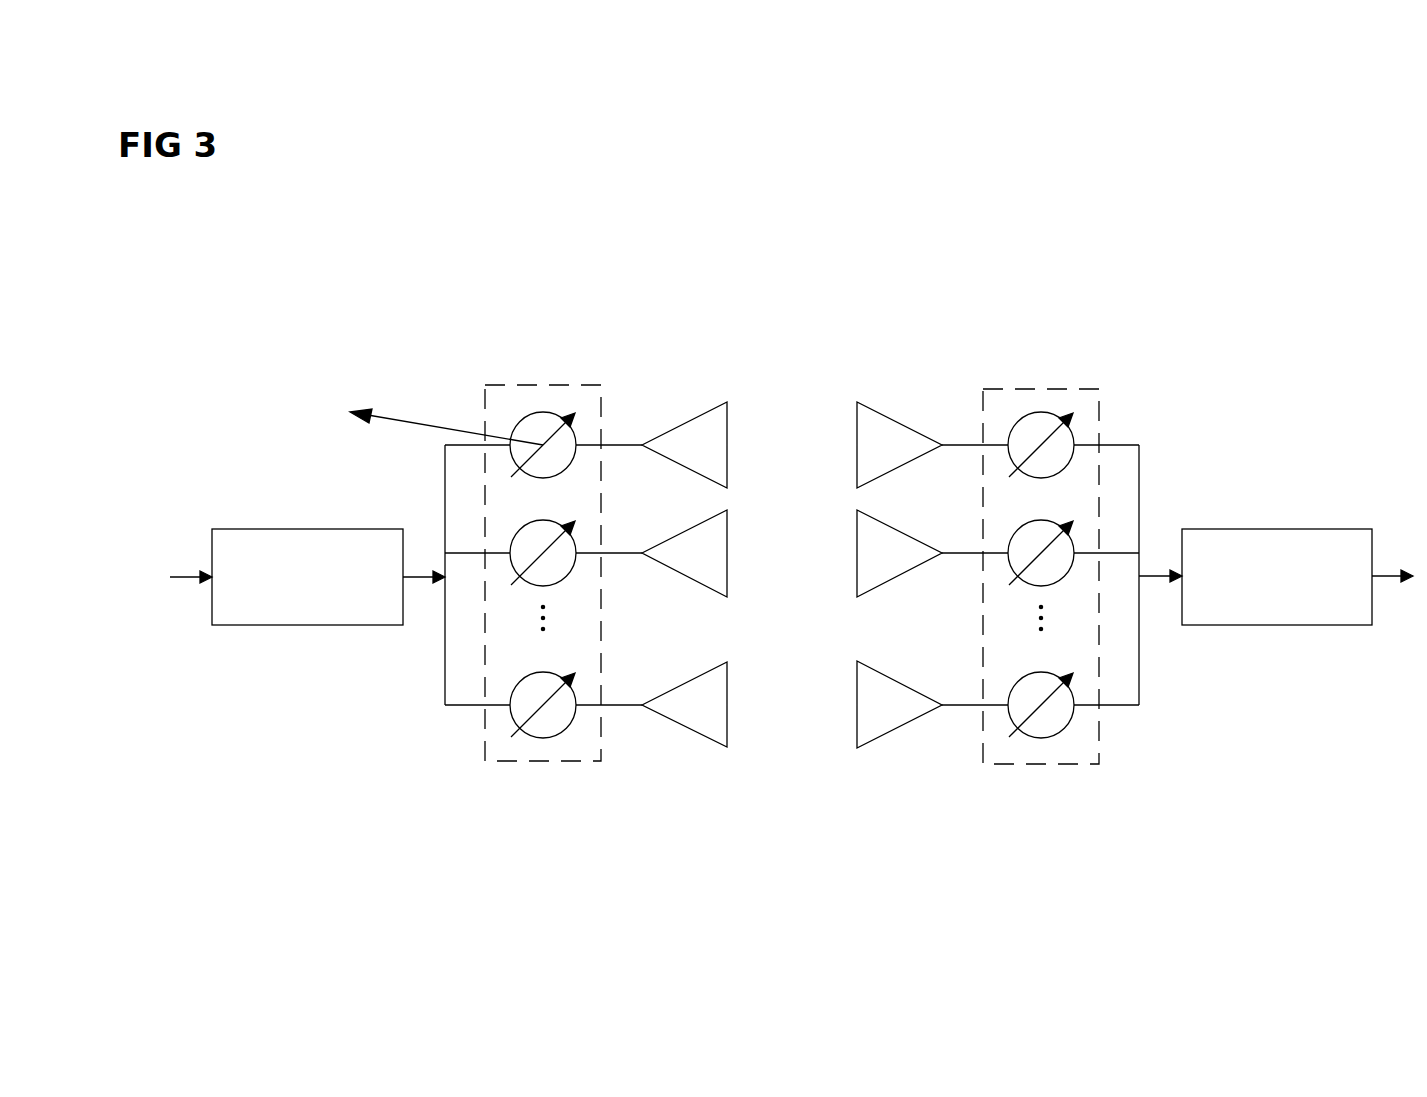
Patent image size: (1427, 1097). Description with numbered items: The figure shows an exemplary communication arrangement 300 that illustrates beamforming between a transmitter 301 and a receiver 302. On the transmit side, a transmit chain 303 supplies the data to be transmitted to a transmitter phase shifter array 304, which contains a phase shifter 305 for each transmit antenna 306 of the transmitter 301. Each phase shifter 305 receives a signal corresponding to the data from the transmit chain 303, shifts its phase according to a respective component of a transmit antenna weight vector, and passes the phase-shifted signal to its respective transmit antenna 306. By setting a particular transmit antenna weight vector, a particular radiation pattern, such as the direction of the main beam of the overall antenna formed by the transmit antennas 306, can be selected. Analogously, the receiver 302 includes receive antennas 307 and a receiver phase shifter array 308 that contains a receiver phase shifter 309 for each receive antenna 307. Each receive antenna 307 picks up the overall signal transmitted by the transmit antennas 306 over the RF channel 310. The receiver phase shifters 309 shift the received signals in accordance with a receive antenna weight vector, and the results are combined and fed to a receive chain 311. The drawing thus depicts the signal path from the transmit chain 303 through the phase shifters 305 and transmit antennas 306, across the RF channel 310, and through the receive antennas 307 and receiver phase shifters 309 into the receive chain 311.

The communication arrangement 300 is at (1307, 194).
The transmitter 301 is at (597, 299).
The receiver 302 is at (1085, 304).
The transmit chain 303 is at (285, 529).
The transmitter phase shifter array 304 is at (498, 762).
The phase shifter 305 is at (565, 475).
The transmit antenna 306 is at (718, 400).
The receive antenna 307 is at (913, 460).
The receiver phase shifter array 308 is at (1027, 765).
The receiver phase shifter 309 is at (1072, 423).
The RF channel 310 is at (783, 640).
The receive chain 311 is at (1248, 530).